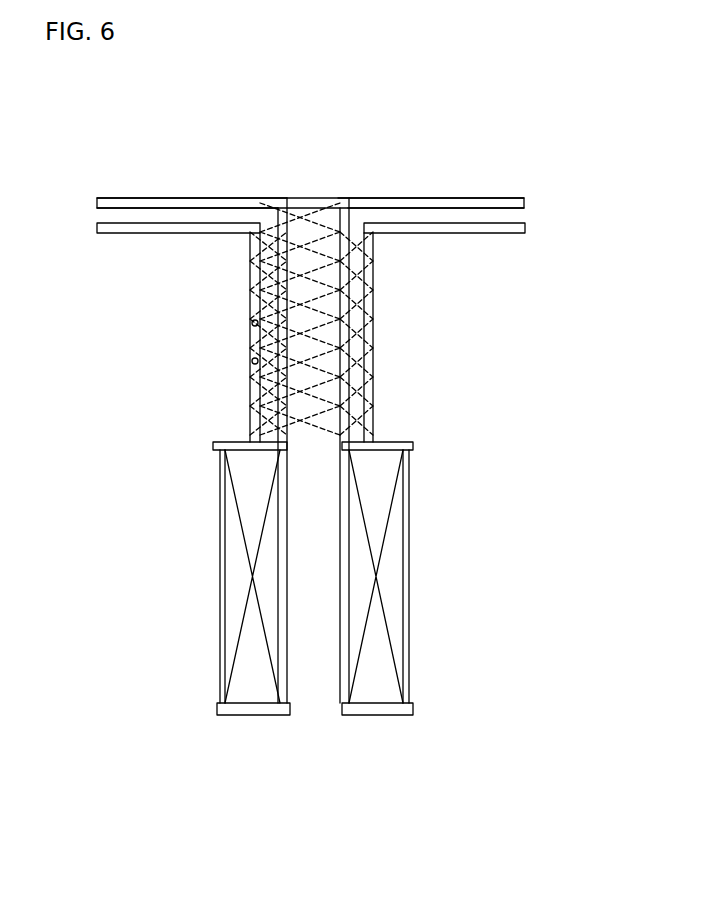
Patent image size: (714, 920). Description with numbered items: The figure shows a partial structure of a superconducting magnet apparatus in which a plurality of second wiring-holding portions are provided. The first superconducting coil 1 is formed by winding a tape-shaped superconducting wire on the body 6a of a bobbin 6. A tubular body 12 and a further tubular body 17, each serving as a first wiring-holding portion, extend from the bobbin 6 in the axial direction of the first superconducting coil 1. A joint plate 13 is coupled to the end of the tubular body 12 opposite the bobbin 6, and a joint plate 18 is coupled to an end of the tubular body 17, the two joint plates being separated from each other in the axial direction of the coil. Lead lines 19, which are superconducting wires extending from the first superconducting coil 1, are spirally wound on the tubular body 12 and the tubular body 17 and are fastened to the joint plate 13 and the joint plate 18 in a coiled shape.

The first superconducting coil 1 is at (409, 520).
The bobbin 6 is at (428, 710).
The body of bobbin 6a is at (352, 588).
The tubular body 12 is at (349, 371).
The joint plate 13 is at (459, 198).
The tubular body 17 is at (373, 318).
The joint plate 18 is at (526, 226).
The lead lines 19 is at (252, 361).